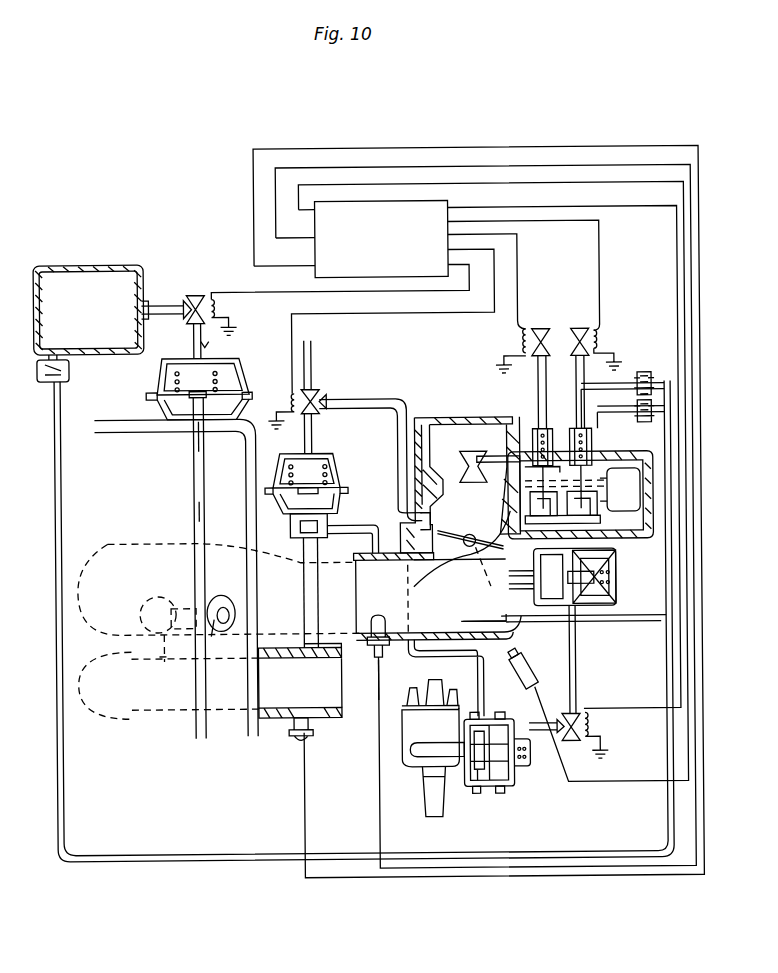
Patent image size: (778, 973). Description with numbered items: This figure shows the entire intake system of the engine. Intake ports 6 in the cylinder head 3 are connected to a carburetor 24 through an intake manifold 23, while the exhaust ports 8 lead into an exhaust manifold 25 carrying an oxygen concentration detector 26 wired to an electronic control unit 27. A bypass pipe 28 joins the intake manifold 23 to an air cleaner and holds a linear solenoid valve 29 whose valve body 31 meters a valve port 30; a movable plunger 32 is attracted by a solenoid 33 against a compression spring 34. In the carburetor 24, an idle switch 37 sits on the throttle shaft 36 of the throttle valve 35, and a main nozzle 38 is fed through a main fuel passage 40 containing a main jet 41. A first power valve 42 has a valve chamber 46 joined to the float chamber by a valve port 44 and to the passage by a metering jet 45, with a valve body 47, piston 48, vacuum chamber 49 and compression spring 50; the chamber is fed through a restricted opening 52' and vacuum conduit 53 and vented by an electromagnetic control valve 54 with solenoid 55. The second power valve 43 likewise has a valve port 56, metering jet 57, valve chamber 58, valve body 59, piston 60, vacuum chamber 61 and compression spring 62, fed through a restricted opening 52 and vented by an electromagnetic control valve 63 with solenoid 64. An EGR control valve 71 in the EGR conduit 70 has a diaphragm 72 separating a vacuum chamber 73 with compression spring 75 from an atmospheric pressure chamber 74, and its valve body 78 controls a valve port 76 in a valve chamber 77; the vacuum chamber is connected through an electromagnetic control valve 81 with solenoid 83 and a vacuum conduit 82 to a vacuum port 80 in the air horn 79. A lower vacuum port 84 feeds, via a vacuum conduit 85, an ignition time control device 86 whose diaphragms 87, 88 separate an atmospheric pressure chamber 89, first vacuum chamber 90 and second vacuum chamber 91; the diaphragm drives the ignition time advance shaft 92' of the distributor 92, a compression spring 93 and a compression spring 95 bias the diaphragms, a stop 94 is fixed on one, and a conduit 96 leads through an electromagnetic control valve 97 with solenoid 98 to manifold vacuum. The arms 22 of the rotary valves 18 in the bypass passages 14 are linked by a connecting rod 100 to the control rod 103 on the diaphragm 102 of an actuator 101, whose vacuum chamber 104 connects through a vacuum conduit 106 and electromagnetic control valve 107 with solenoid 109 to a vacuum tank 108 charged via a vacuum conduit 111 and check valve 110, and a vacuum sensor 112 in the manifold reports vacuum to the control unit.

The cylinder head 3 is at (108, 419).
The intake port 6 is at (155, 543).
The exhaust port 8 is at (165, 713).
The bypass passage 14 is at (138, 618).
The rotary valve 18 is at (165, 656).
The arm 22 is at (222, 636).
The intake manifold 23 is at (394, 646).
The carburetor 24 is at (422, 397).
The exhaust manifold 25 is at (318, 722).
The oxygen concentration detector 26 is at (291, 737).
The electronic control unit 27 is at (317, 268).
The bypass pipe 28 is at (617, 580).
The linear solenoid valve 29 is at (628, 625).
The valve port 30 is at (534, 604).
The valve body 31 is at (576, 662).
The movable plunger 32 is at (582, 623).
The solenoid 33 is at (602, 586).
The compression spring 34 is at (700, 653).
The throttle valve 35 is at (408, 575).
The throttle shaft 36 is at (406, 598).
The idle switch 37 is at (539, 686).
The main nozzle 38 is at (468, 455).
The main fuel passage 40 is at (500, 583).
The main jet 41 is at (500, 621).
The first power valve 42 is at (577, 418).
The second power valve 43 is at (600, 441).
The valve port 44 is at (650, 480).
The metering jet 45 is at (610, 550).
The valve chamber 46 is at (492, 560).
The valve body 47 is at (642, 470).
The piston 48 is at (515, 430).
The vacuum chamber 49 is at (535, 428).
The compression spring 50 is at (541, 326).
The restricted opening 52 is at (681, 360).
The restricted opening 52' is at (684, 400).
The vacuum conduit 53 is at (668, 380).
The electromagnetic control valve 54 is at (518, 325).
The solenoid 55 is at (520, 344).
The valve port 56 is at (612, 492).
The metering jet 57 is at (657, 538).
The valve chamber 58 is at (660, 530).
The valve body 59 is at (652, 508).
The piston 60 is at (658, 448).
The vacuum chamber 61 is at (600, 400).
The compression spring 62 is at (600, 375).
The electromagnetic control valve 63 is at (590, 326).
The solenoid 64 is at (600, 340).
The EGR conduit 70 is at (370, 526).
The EGR control valve 71 is at (345, 470).
The diaphragm 72 is at (340, 478).
The vacuum chamber 73 is at (276, 477).
The atmospheric pressure chamber 74 is at (284, 508).
The compression spring 75 is at (334, 450).
The valve port 76 is at (299, 546).
The valve chamber 77 is at (292, 524).
The valve body 78 is at (319, 546).
The air horn 79 is at (428, 440).
The vacuum port 80 is at (433, 521).
The electromagnetic control valve 81 is at (311, 390).
The vacuum conduit 82 is at (365, 399).
The solenoid 83 is at (291, 403).
The vacuum port 84 is at (438, 527).
The vacuum conduit 85 is at (445, 662).
The ignition time control device 86 is at (496, 710).
The diaphragm 87 is at (474, 784).
The diaphragm 88 is at (503, 782).
The atmospheric pressure chamber 89 is at (460, 778).
The first vacuum chamber 90 is at (486, 786).
The second vacuum chamber 91 is at (527, 768).
The distributor 92 is at (406, 723).
The ignition time advance shaft 92' is at (375, 778).
The compression spring 93 is at (458, 775).
The stop 94 is at (518, 757).
The compression spring 95 is at (513, 767).
The conduit 96 is at (524, 760).
The electromagnetic control valve 97 is at (575, 746).
The solenoid 98 is at (600, 731).
The connecting rod 100 is at (196, 503).
The actuator 101 is at (171, 338).
The diaphragm 102 is at (160, 392).
The control rod 103 is at (198, 455).
The vacuum chamber 104 is at (238, 378).
The vacuum conduit 106 is at (205, 342).
The electromagnetic control valve 107 is at (197, 293).
The vacuum tank 108 is at (85, 263).
The solenoid 109 is at (222, 306).
The check valve 110 is at (70, 367).
The vacuum conduit 111 is at (63, 526).
The vacuum sensor 112 is at (368, 632).